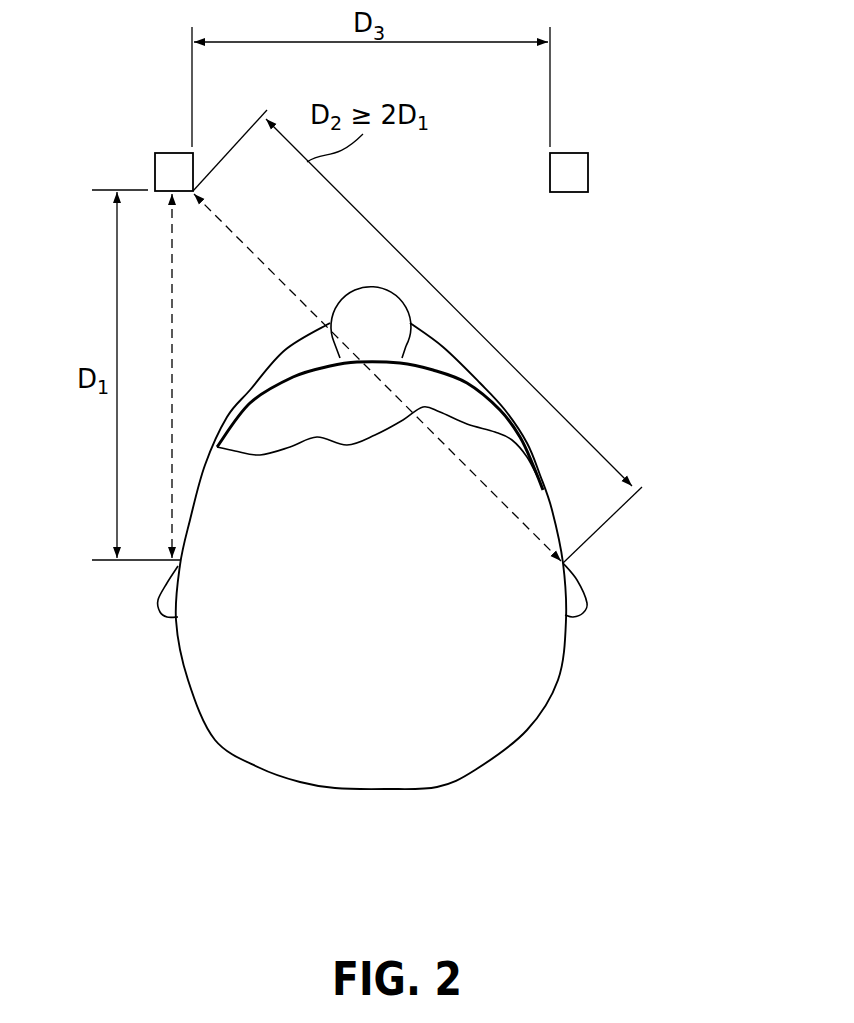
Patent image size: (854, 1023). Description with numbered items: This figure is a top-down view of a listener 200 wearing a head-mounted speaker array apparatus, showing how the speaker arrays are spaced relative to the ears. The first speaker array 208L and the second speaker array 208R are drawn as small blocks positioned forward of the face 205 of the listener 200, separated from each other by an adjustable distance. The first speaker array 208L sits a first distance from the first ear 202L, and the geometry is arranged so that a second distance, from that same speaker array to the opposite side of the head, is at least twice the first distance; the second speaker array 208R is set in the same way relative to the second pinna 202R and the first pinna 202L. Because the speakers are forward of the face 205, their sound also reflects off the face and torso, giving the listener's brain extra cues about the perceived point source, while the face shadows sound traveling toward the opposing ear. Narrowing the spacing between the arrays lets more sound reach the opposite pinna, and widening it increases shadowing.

The listener 200 is at (508, 732).
The first ear 202L is at (157, 607).
The second pinna 202R is at (587, 607).
The face 205 is at (443, 352).
The first speaker array 208L is at (154, 172).
The second speaker array 208R is at (588, 172).